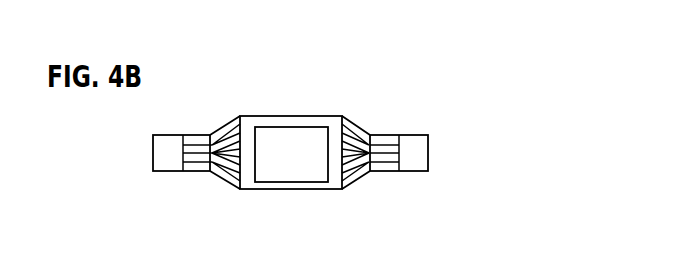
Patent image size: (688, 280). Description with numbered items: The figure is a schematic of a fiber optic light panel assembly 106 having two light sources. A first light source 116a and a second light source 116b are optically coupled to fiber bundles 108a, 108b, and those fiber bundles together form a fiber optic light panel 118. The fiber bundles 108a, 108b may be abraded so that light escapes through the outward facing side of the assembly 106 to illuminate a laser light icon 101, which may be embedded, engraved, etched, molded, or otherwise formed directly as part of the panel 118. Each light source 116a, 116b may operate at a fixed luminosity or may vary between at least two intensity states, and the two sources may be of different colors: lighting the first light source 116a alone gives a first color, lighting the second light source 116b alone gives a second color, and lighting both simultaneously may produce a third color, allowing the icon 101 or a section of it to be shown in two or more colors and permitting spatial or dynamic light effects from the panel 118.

The fiber optic light panel assembly 106 is at (478, 74).
The laser light icon 101 is at (312, 127).
The fiber optic light panel 118 is at (287, 190).
The first fiber bundle 108a is at (225, 125).
The second fiber bundle 108b is at (355, 125).
The first light source 116a is at (165, 171).
The second light source 116b is at (412, 172).